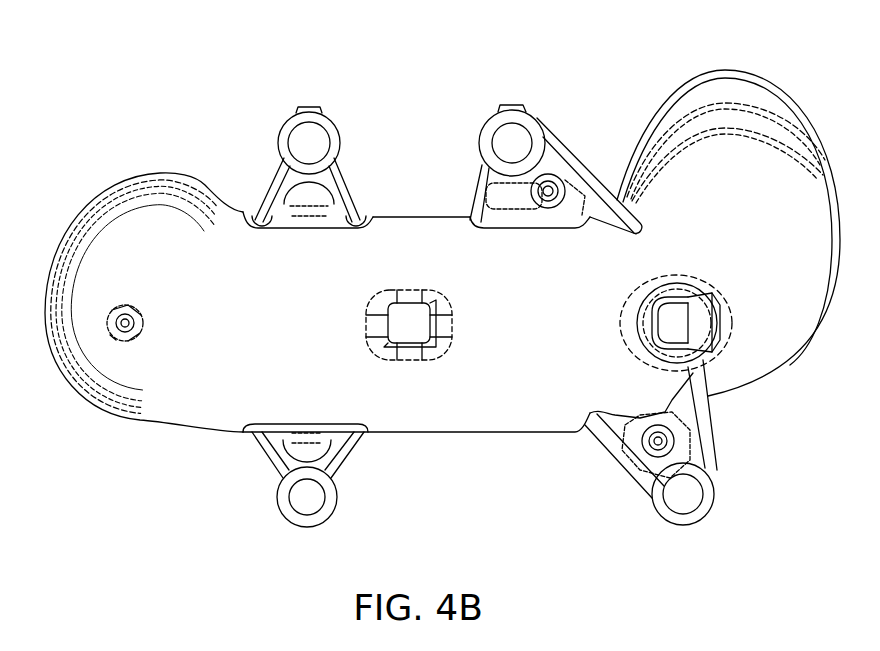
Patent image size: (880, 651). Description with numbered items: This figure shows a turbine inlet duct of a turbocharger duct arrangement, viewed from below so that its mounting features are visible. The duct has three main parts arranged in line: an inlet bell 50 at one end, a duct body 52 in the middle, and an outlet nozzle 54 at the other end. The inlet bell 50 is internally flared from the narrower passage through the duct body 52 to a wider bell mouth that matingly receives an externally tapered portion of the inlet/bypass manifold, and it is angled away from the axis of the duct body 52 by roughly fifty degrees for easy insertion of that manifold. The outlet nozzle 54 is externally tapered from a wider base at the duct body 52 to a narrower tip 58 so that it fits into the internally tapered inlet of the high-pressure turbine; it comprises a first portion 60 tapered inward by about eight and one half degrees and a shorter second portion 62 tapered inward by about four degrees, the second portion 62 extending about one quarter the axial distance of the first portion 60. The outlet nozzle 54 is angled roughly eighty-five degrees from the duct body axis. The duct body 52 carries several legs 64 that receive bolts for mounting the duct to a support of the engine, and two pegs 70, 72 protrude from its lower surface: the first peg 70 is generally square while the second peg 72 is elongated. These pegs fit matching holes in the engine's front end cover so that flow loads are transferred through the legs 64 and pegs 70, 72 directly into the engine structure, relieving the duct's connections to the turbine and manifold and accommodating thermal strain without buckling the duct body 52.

The inlet bell 50 is at (160, 417).
The duct body 52 is at (463, 435).
The outlet nozzle 54 is at (728, 224).
The tip 58 is at (710, 64).
The first portion 60 is at (783, 108).
The second portion 62 is at (775, 86).
The legs 64 is at (330, 122).
The first peg 70 is at (430, 327).
The second peg 72 is at (692, 305).